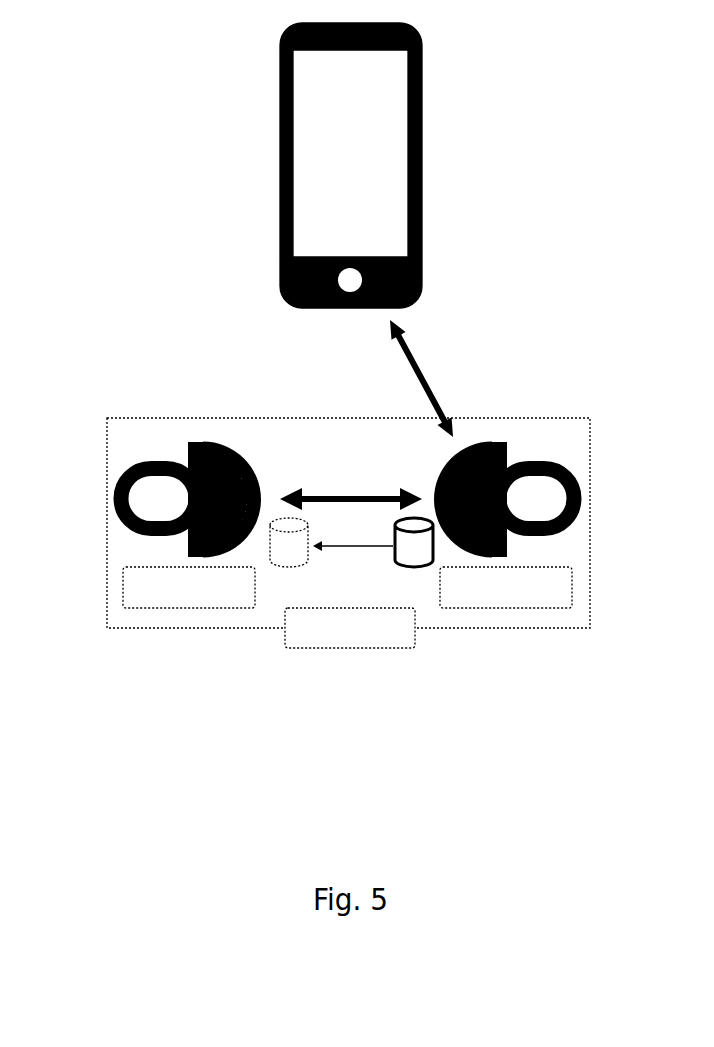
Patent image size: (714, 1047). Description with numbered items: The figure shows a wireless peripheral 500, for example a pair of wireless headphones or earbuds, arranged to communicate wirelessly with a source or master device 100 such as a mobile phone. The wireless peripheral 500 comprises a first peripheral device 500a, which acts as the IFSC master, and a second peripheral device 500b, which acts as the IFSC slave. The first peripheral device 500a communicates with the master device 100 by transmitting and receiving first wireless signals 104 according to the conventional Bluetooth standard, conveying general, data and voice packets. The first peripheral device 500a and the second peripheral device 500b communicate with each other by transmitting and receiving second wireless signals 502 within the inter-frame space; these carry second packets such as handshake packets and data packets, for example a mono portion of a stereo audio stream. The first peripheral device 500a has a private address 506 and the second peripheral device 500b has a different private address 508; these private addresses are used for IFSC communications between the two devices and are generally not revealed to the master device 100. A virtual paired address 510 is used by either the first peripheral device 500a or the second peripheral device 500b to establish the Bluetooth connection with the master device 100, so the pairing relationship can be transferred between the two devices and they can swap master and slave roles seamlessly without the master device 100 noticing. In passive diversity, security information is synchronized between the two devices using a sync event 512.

The source/master device 100 is at (311, 165).
The first wireless signals 104 is at (443, 378).
The wireless peripheral 500 is at (308, 512).
The first peripheral device 500a is at (549, 497).
The second peripheral device 500b is at (147, 500).
The second wireless signals 502 is at (351, 468).
The private address 506 is at (548, 584).
The private address 508 is at (144, 580).
The virtual paired address 510 is at (350, 664).
The sync event 512 is at (351, 561).